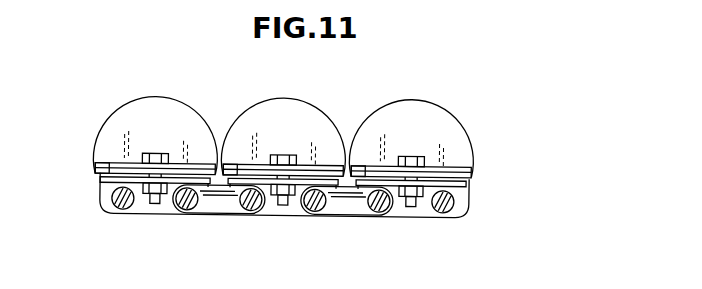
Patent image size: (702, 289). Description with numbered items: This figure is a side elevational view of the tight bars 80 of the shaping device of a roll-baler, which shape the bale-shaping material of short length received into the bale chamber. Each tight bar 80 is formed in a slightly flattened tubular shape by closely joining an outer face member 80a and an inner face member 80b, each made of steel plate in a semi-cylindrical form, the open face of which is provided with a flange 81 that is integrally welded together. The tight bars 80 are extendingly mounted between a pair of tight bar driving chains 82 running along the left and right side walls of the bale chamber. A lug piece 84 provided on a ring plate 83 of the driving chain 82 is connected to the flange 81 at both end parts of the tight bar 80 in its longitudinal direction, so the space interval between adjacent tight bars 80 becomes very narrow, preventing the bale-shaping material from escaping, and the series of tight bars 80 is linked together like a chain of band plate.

The tight bar 80 is at (157, 133).
The outer face member 80a is at (445, 145).
The inner face member 80b is at (465, 190).
The flange 81 is at (470, 168).
The driving chain 82 is at (283, 216).
The ring plate 83 is at (138, 209).
The lug piece 84 is at (101, 167).